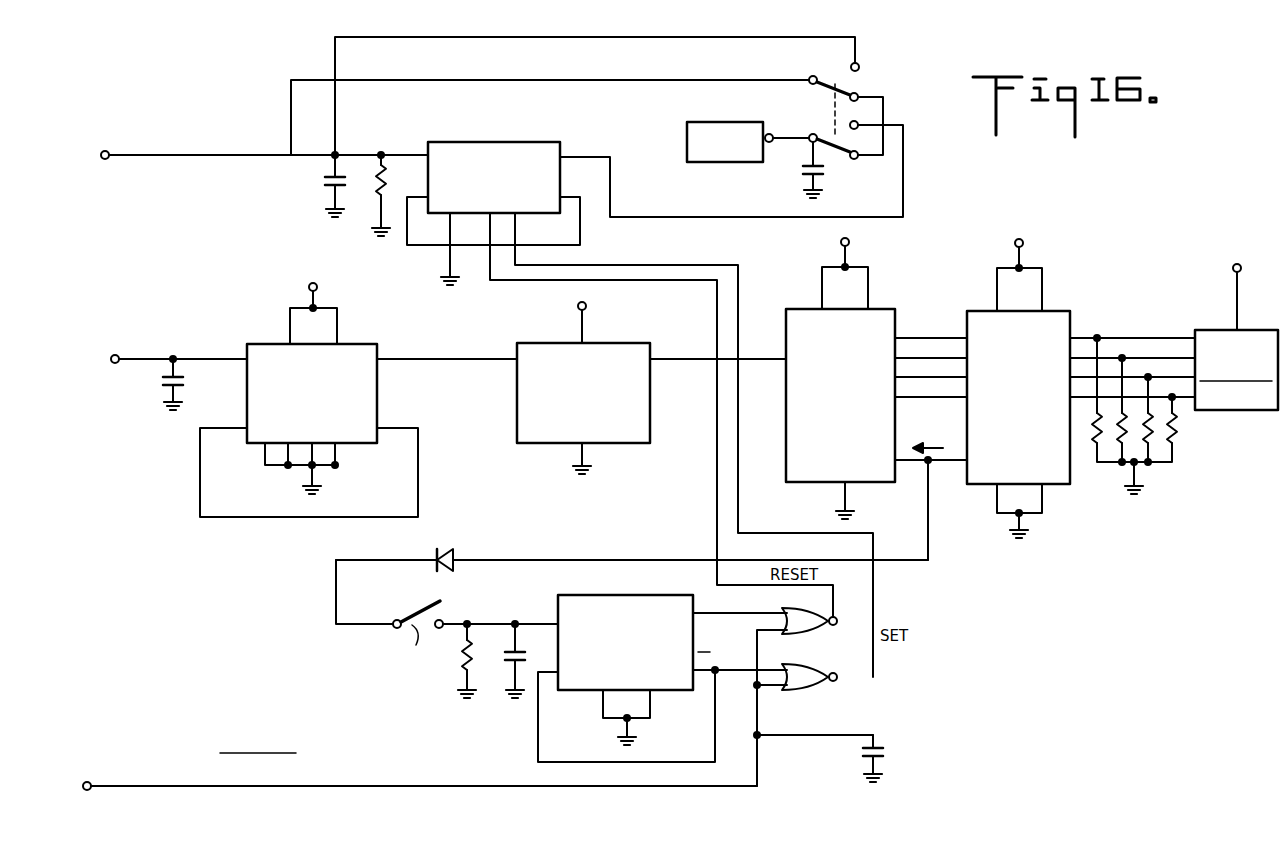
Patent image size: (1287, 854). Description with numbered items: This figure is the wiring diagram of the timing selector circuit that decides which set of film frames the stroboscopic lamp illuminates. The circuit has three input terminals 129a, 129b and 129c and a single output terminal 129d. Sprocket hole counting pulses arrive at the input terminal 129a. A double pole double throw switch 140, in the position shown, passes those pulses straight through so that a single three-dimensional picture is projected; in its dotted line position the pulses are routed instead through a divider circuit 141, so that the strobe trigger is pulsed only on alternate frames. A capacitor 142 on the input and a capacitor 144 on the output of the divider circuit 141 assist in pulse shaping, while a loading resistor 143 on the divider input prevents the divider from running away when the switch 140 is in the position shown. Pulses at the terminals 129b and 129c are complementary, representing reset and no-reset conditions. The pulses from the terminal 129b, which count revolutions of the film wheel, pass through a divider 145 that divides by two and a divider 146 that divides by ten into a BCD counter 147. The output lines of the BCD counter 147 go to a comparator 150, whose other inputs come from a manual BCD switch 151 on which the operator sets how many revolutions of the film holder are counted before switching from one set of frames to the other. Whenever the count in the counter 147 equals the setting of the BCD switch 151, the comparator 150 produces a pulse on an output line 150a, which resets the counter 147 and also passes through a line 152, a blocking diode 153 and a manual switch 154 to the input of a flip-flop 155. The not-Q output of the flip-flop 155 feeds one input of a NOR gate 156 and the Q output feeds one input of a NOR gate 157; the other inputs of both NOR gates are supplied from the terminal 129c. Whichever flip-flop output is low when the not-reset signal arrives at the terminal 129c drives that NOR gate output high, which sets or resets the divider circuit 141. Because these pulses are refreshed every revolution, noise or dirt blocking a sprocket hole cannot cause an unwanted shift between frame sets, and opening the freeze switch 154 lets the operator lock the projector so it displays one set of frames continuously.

The input terminal 129a is at (110, 150).
The input terminal 129b is at (132, 339).
The input terminal 129c is at (92, 779).
The output terminal 129d is at (776, 131).
The double pole double throw switch 140 is at (860, 87).
The divider circuit 141 is at (562, 177).
The capacitor 142 is at (322, 184).
The resistor 143 is at (372, 212).
The capacitor 144 is at (824, 178).
The divider 145 is at (379, 397).
The divider 146 is at (652, 405).
The BCD counter 147 is at (886, 318).
The comparator 150 is at (1053, 317).
The output line 150a is at (940, 466).
The manual BCD switch 151 is at (1240, 337).
The line 152 is at (580, 560).
The blocking diode 153 is at (455, 546).
The manual switch 154 is at (419, 612).
The flip-flop 155 is at (585, 595).
The NOR gate 156 is at (824, 638).
The NOR gate 157 is at (822, 665).